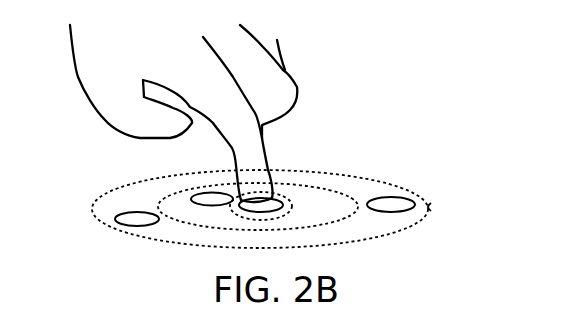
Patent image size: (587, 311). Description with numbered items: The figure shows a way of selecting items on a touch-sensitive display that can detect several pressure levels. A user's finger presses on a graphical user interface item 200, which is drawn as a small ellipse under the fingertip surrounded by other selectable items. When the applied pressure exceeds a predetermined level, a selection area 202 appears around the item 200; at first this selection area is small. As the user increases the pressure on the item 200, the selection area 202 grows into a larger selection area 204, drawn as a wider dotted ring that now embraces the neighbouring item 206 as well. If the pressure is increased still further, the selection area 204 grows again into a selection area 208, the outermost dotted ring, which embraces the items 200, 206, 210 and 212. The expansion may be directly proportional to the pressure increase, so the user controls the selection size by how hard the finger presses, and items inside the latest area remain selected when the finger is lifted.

The graphical user interface item 200 is at (290, 210).
The selection area 202 is at (352, 196).
The larger selection area 204 is at (362, 178).
The graphical user interface item 206 is at (190, 199).
The selection area 208 is at (427, 207).
The graphical user interface item 210 is at (410, 206).
The graphical user interface item 212 is at (120, 225).